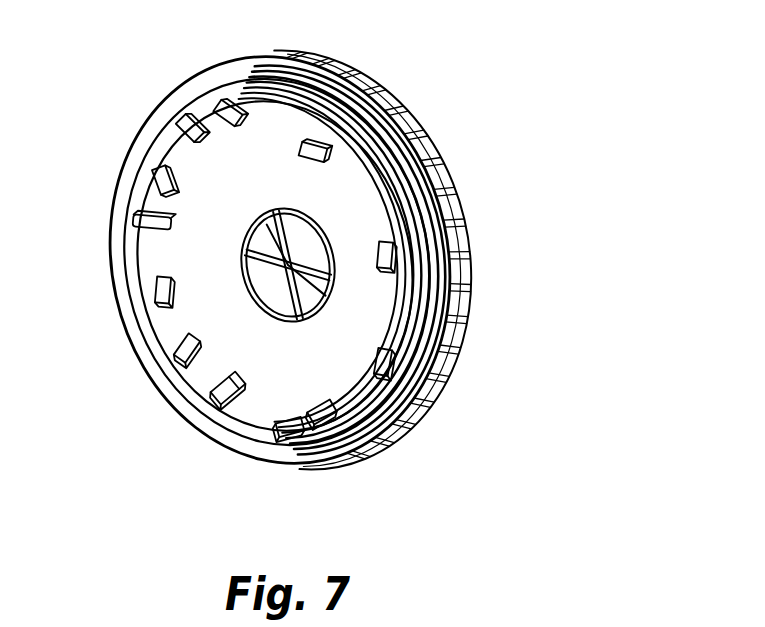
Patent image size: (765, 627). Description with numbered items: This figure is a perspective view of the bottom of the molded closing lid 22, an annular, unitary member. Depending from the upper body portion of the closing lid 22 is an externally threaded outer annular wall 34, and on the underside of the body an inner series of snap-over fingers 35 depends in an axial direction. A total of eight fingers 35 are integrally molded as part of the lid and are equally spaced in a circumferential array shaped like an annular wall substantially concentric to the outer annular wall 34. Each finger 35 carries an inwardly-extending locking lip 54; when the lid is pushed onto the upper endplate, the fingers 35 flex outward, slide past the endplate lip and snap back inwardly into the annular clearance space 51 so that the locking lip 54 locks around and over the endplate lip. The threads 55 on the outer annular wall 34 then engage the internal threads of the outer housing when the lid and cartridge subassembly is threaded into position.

The closing lid 22 is at (309, 251).
The outer annular wall 34 is at (120, 224).
The snap-over fingers 35 is at (322, 150).
The annular clearance space 51 is at (212, 396).
The locking lip 54 is at (165, 222).
The threads 55 is at (418, 303).